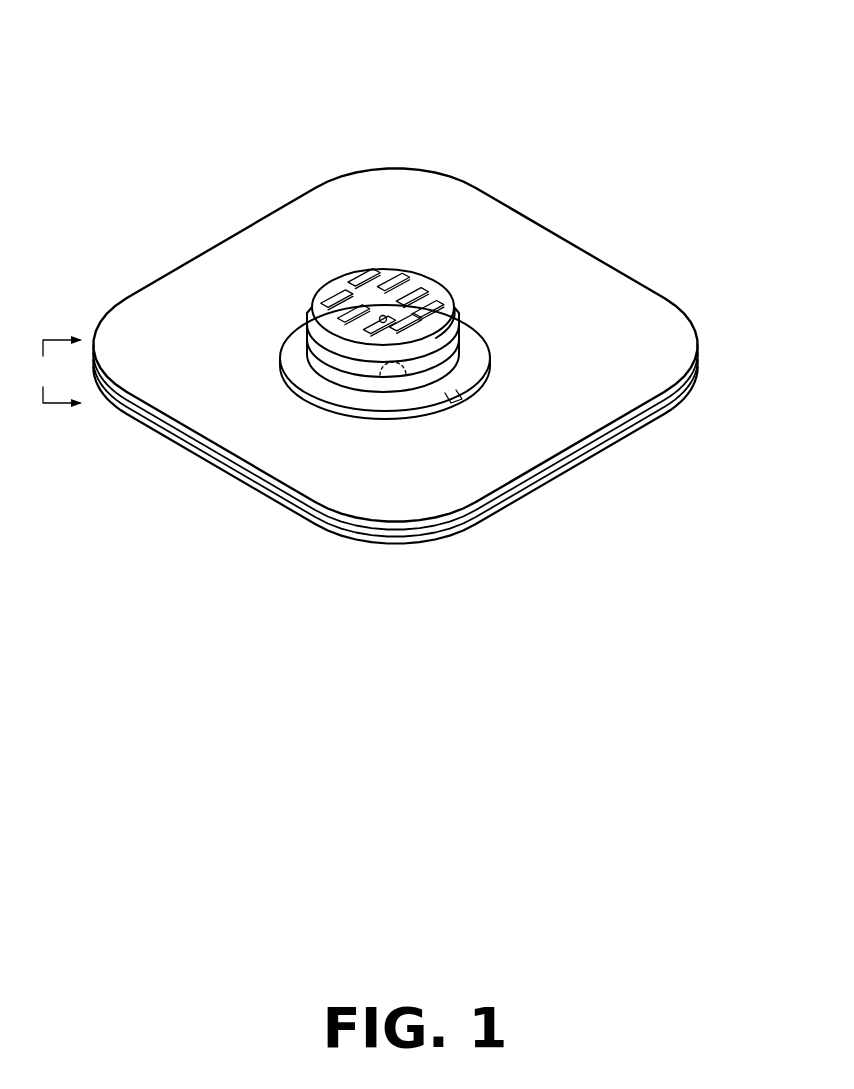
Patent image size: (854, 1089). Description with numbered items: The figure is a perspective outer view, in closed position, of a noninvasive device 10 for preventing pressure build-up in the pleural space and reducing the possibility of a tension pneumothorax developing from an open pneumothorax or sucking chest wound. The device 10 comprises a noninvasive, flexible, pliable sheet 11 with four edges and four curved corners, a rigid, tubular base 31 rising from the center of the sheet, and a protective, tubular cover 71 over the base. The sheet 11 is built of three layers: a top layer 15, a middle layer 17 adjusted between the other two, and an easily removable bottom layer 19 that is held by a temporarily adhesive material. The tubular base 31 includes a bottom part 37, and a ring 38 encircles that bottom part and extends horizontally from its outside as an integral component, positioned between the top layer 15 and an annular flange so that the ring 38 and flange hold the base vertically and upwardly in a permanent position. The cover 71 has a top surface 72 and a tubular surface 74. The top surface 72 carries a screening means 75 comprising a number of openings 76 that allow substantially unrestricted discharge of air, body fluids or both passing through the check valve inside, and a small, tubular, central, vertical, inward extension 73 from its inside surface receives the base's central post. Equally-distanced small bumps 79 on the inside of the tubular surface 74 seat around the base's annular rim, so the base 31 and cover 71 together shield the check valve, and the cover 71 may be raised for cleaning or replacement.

The noninvasive device 10 is at (290, 165).
The flexible, pliable sheet 11 is at (58, 371).
The top layer 15 is at (675, 415).
The middle layer 17 is at (530, 484).
The bottom layer 19 is at (217, 468).
The rigid, tubular base 31 is at (293, 412).
The bottom part of tubular base 37 is at (462, 365).
The ring 38 is at (453, 397).
The protective, tubular cover 71 is at (332, 302).
The top surface of cover 72 is at (393, 265).
The central vertical inward extension 73 is at (383, 322).
The tubular surface of cover 74 is at (318, 358).
The screening means 75 is at (342, 292).
The openings 76 is at (428, 288).
The small bumps 79 is at (400, 372).